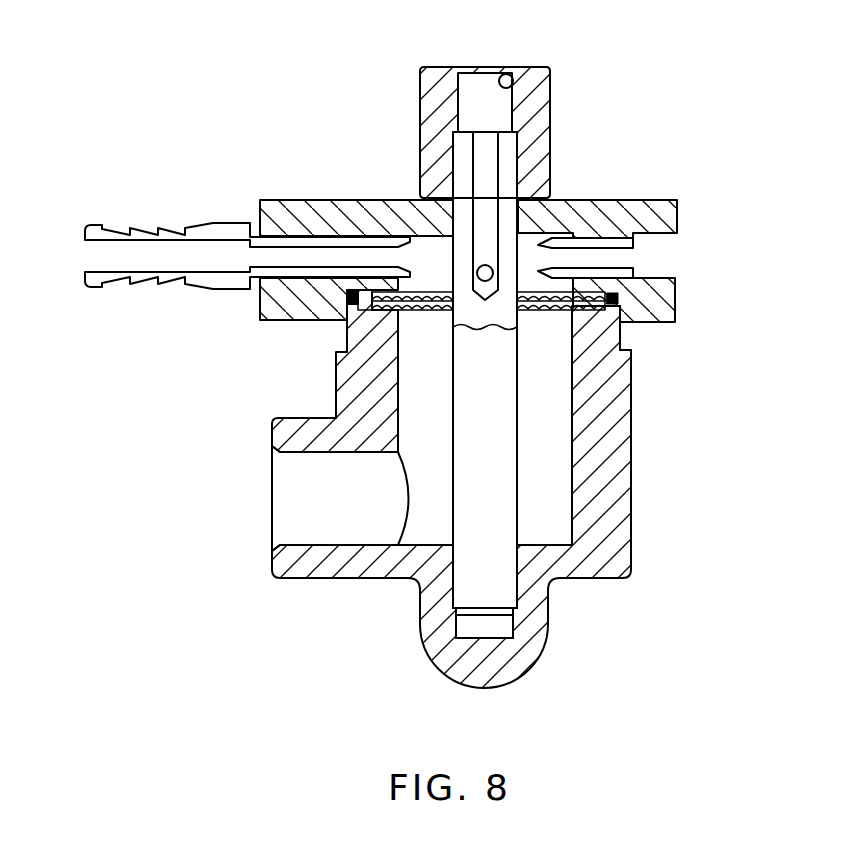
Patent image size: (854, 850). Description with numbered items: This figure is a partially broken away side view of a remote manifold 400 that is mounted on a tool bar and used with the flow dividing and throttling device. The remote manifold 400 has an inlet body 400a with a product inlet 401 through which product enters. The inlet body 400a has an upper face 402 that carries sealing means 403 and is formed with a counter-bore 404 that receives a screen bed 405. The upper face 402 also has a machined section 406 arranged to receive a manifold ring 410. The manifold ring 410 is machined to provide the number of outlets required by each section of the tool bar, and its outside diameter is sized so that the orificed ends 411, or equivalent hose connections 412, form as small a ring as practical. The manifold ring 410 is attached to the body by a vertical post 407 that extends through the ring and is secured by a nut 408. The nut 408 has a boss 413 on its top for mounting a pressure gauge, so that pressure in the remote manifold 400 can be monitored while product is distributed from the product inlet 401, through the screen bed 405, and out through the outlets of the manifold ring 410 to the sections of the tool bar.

The remote manifold 400 is at (200, 434).
The inlet body 400a is at (615, 567).
The product inlet 401 is at (290, 510).
The upper face 402 is at (347, 307).
The sealing means 403 is at (338, 311).
The counter-bore 404 is at (396, 311).
The screen bed 405 is at (521, 311).
The machined section 406 is at (622, 342).
The vertical post 407 is at (502, 445).
The nut 408 is at (545, 150).
The manifold ring 410 is at (373, 204).
The orificed ends 411 is at (543, 248).
The hose connections 412 is at (229, 220).
The boss 413 is at (512, 79).